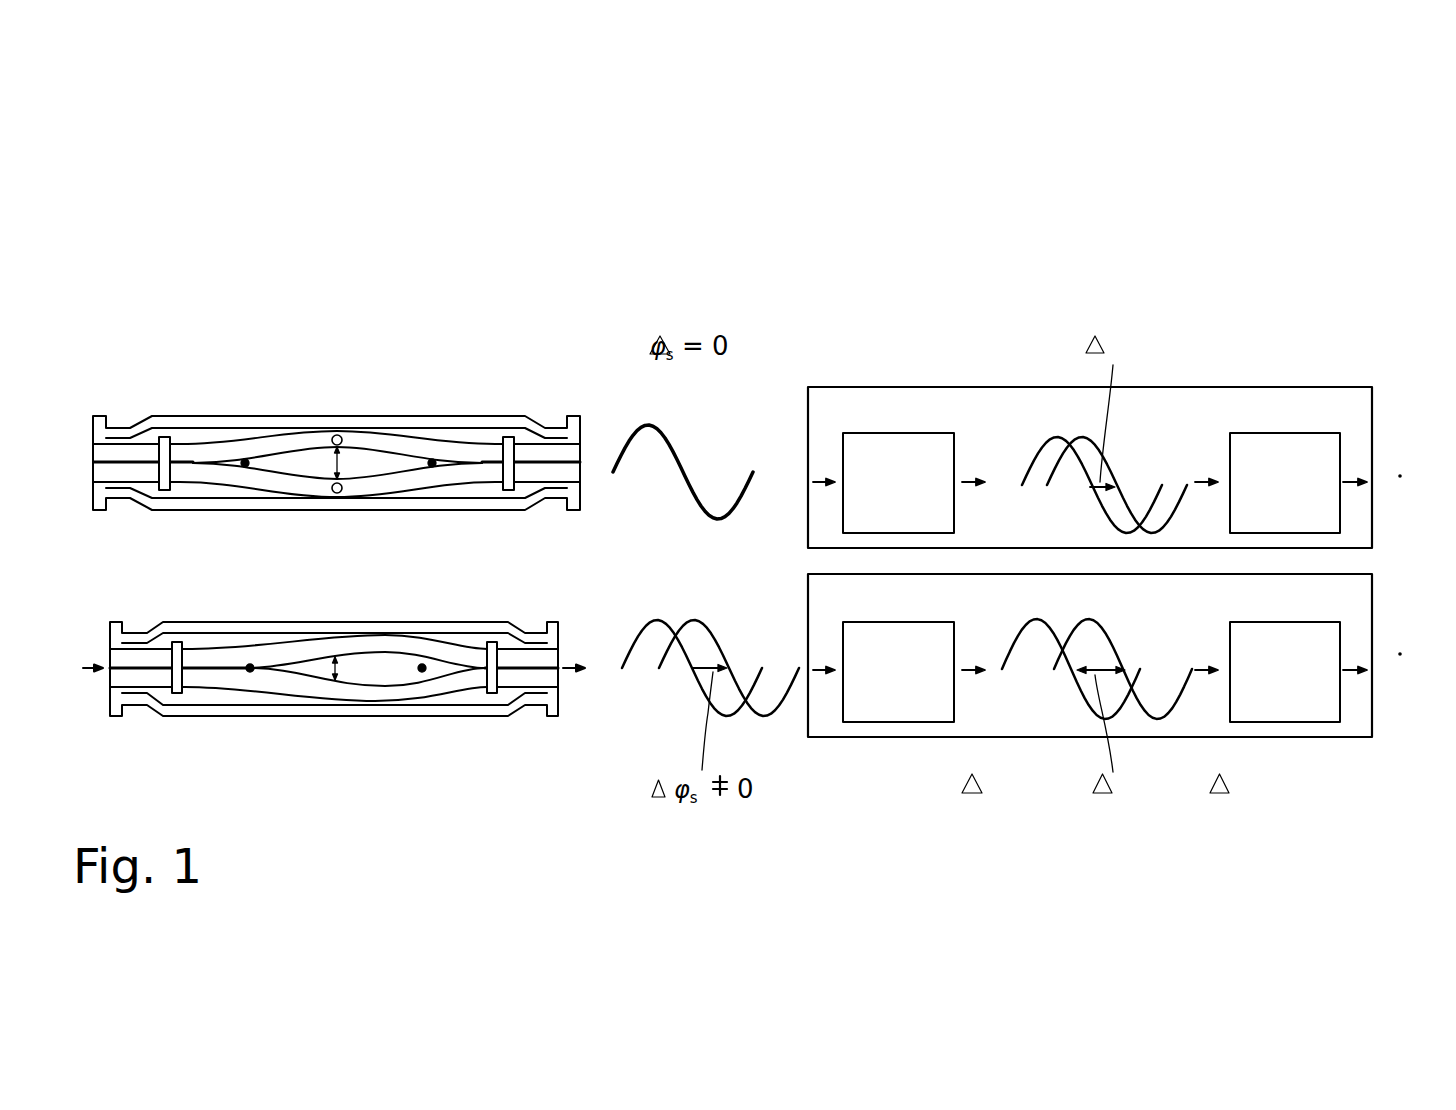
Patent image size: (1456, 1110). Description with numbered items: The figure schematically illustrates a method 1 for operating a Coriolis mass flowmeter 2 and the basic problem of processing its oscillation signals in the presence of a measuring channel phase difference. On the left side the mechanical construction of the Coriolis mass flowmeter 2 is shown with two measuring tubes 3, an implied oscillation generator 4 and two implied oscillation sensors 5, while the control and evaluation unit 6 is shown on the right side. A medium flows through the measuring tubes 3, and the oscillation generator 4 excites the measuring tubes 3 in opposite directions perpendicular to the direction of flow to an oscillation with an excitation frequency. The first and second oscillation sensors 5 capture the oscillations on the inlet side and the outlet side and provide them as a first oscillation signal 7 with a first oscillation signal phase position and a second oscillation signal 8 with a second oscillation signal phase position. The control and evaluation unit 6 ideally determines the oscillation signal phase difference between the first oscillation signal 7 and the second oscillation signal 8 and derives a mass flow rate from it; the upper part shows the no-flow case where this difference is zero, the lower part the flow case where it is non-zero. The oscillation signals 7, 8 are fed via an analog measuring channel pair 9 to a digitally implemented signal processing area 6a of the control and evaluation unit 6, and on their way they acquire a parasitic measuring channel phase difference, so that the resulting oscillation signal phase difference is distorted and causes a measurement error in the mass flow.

The method 1 is at (760, 198).
The Coriolis mass flowmeter 2 is at (143, 376).
The measuring tubes 3 is at (543, 452).
The oscillation generator 4 is at (335, 463).
The oscillation sensors 5 is at (245, 463).
The control and evaluation unit 6 is at (1127, 577).
The signal processing area 6a is at (1285, 577).
The first oscillation signal 7 is at (637, 432).
The second oscillation signal 8 is at (765, 715).
The analog measuring channel pair 9 is at (898, 577).